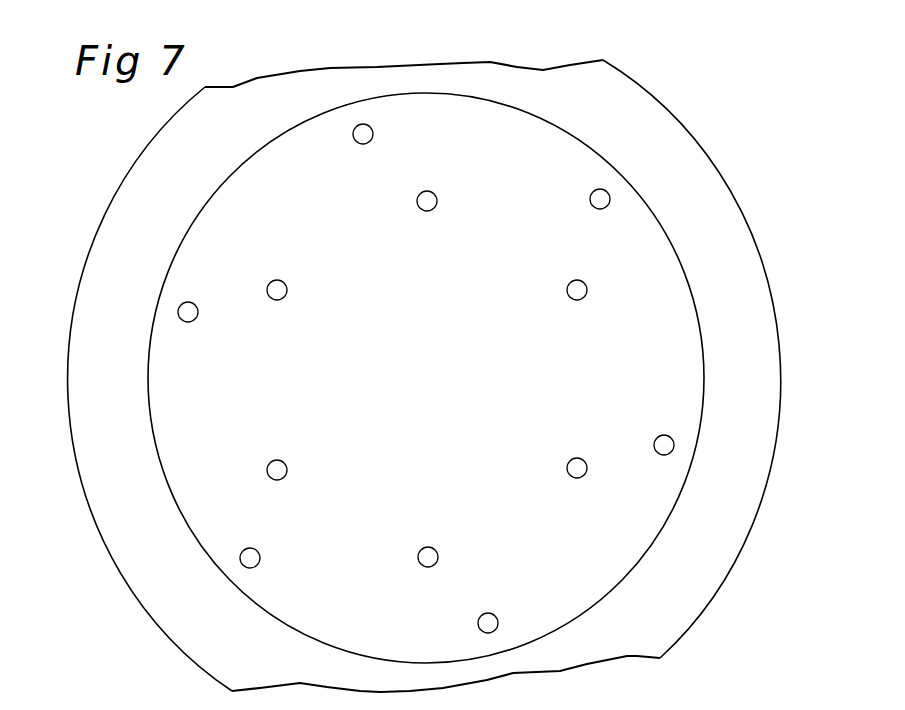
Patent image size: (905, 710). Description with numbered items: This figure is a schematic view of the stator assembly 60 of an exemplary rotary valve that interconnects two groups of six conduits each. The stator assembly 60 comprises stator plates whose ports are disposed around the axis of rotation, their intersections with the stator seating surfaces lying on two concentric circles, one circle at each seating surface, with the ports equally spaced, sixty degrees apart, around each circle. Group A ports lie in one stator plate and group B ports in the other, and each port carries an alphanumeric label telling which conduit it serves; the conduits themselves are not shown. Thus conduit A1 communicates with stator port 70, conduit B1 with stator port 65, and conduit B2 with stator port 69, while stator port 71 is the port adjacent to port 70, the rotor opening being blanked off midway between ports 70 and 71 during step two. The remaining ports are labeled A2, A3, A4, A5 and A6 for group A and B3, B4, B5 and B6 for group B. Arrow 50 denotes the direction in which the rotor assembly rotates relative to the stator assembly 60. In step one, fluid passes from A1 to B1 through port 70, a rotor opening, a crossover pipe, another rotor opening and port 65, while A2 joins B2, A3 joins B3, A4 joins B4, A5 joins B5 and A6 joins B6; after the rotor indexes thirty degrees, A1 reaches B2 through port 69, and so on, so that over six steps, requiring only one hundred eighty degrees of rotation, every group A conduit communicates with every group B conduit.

The arrow 50 is at (63, 247).
The stator assembly 60 is at (700, 140).
The stator port 65 is at (434, 566).
The stator port 69 is at (583, 476).
The stator port 70 is at (358, 143).
The stator port 71 is at (191, 322).
The conduit A1 is at (373, 133).
The conduit A2 is at (593, 190).
The conduit A3 is at (662, 435).
The conduit A4 is at (493, 614).
The conduit A5 is at (257, 550).
The conduit A6 is at (210, 311).
The conduit B1 is at (434, 557).
The conduit B2 is at (573, 470).
The conduit B3 is at (570, 281).
The conduit B4 is at (434, 193).
The conduit B5 is at (284, 282).
The conduit B6 is at (284, 462).